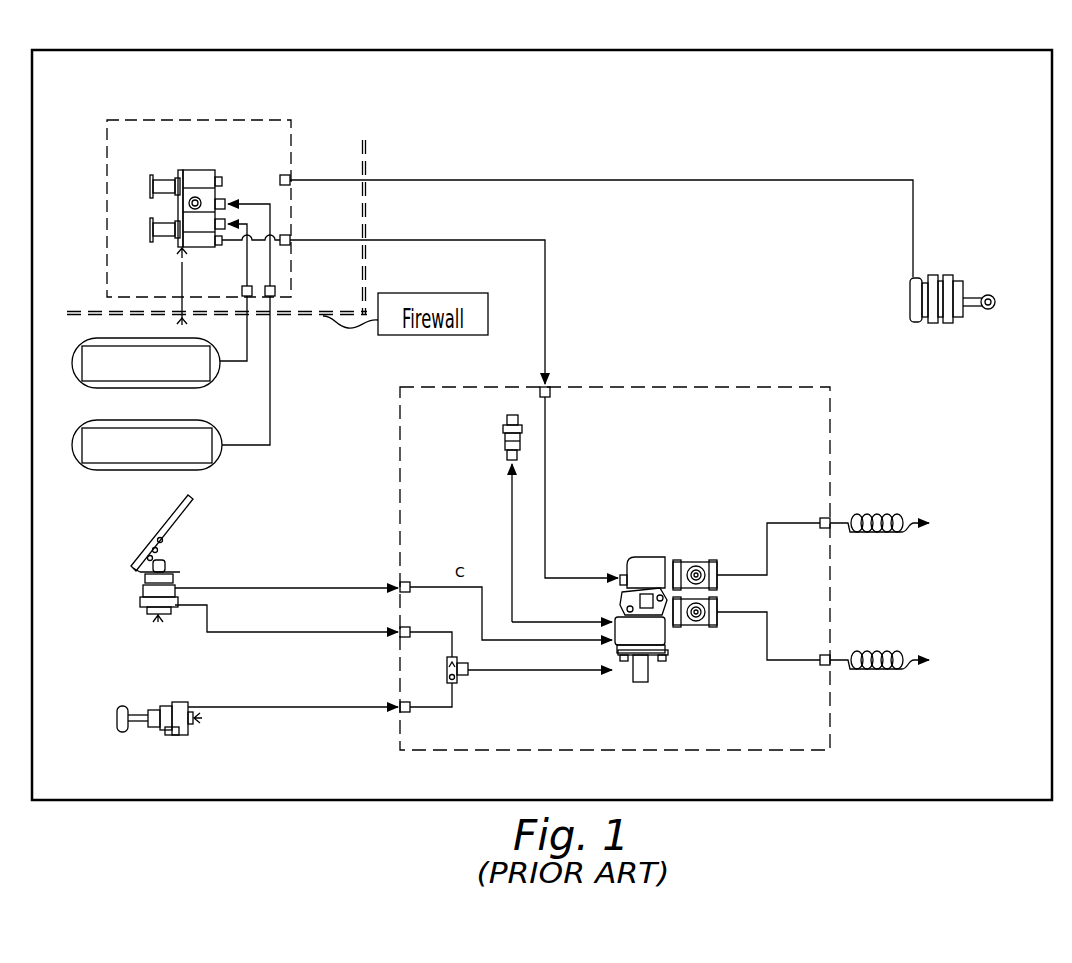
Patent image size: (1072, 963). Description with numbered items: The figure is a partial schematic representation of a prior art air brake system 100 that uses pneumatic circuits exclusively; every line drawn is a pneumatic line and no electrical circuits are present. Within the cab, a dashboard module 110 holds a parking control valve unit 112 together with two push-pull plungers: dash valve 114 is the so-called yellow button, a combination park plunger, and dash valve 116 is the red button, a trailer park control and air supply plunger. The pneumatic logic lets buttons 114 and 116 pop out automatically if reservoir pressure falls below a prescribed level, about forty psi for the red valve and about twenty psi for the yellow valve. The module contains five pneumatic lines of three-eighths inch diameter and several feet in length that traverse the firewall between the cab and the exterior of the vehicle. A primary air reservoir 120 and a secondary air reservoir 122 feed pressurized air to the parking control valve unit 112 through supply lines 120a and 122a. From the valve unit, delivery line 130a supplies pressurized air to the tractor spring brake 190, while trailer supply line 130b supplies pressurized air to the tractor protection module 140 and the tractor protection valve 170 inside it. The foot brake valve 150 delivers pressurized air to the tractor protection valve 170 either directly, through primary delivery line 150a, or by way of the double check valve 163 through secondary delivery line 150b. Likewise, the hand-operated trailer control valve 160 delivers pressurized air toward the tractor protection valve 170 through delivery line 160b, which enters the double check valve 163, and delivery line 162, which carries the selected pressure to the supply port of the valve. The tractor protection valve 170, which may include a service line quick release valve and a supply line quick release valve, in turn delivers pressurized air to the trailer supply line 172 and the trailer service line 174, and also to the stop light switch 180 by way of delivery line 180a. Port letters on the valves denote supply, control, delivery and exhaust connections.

The air brake system 100 is at (400, 42).
The dashboard module 110 is at (205, 119).
The parking control valve unit 112 is at (215, 170).
The dash valve 114 is at (149, 193).
The dash valve 116 is at (149, 242).
The primary air reservoir 120 is at (82, 386).
The supply line 120a is at (228, 368).
The secondary air reservoir 122 is at (82, 468).
The supply line 122a is at (254, 447).
The delivery line 130a is at (641, 179).
The trailer supply line 130b is at (546, 256).
The tractor protection module 140 is at (655, 753).
The foot brake valve 150 is at (186, 517).
The primary delivery line 150a is at (341, 586).
The secondary delivery line 150b is at (336, 634).
The trailer control valve 160 is at (185, 737).
The delivery line 160b is at (330, 708).
The delivery line 162 is at (578, 672).
The double check valve 163 is at (462, 683).
The tractor protection valve 170 is at (661, 557).
The trailer supply line 172 is at (790, 522).
The trailer service line 174 is at (811, 661).
The stop light switch 180 is at (503, 432).
The delivery line 180a is at (511, 525).
The spring brake 190 is at (993, 292).